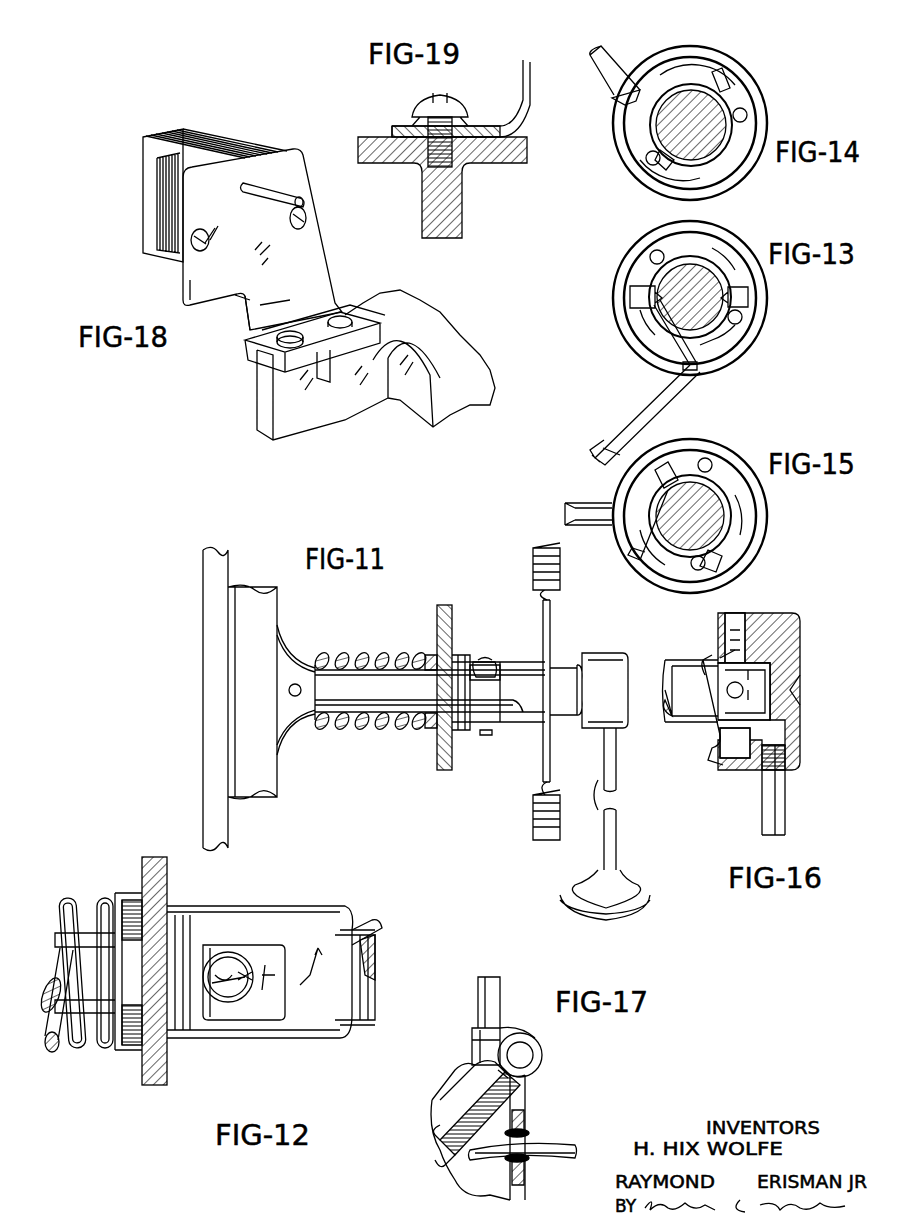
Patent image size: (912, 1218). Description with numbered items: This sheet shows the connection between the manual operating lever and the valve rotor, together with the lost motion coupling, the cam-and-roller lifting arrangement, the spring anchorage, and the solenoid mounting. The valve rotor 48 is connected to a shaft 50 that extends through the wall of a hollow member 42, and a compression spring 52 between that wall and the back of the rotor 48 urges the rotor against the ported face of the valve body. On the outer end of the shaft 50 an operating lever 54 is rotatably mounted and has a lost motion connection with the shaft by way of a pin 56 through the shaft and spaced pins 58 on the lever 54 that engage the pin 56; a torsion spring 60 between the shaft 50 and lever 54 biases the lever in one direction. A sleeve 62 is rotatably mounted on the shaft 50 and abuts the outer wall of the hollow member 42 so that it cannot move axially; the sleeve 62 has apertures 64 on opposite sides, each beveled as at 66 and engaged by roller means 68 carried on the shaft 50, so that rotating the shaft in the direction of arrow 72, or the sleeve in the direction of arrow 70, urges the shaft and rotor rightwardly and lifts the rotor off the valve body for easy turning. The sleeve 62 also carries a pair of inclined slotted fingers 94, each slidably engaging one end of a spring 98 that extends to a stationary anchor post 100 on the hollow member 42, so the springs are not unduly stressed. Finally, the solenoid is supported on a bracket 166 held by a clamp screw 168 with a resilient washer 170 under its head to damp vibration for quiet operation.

In FIG. 11, the hollow member 42 is at (440, 775).
In FIG. 12, the hollow member 42 is at (160, 1085).
In FIG. 11, the valve rotor 48 is at (262, 775).
In FIG. 14, the shaft 50 is at (740, 165).
In FIG. 13, the shaft 50 is at (660, 300).
In FIG. 15, the shaft 50 is at (655, 548).
In FIG. 16, the shaft 50 is at (660, 672).
In FIG. 11, the shaft 50 is at (362, 697).
In FIG. 12, the shaft 50 is at (365, 990).
In FIG. 11, the compression spring 52 is at (350, 662).
In FIG. 12, the compression spring 52 is at (82, 1052).
In FIG. 14, the operating lever 54 is at (628, 75).
In FIG. 13, the operating lever 54 is at (608, 428).
In FIG. 15, the operating lever 54 is at (572, 500).
In FIG. 16, the operating lever 54 is at (765, 808).
In FIG. 11, the operating lever 54 is at (620, 770).
In FIG. 14, the pin 56 is at (720, 70).
In FIG. 13, the pin 56 is at (638, 292).
In FIG. 15, the pin 56 is at (662, 468).
In FIG. 16, the pin 56 is at (735, 610).
In FIG. 14, the spaced pins 58 is at (747, 115).
In FIG. 13, the spaced pins 58 is at (650, 255).
In FIG. 15, the spaced pins 58 is at (710, 460).
In FIG. 14, the torsion spring 60 is at (655, 125).
In FIG. 13, the torsion spring 60 is at (655, 318).
In FIG. 15, the torsion spring 60 is at (735, 510).
In FIG. 16, the torsion spring 60 is at (698, 650).
In FIG. 11, the torsion spring 60 is at (612, 692).
In FIG. 11, the sleeve 62 is at (503, 728).
In FIG. 12, the sleeve 62 is at (330, 925).
In FIG. 11, the apertures 64 is at (487, 662).
In FIG. 12, the apertures 64 is at (265, 968).
In FIG. 12, the beveled side 66 is at (225, 1022).
In FIG. 11, the roller means 68 is at (480, 678).
In FIG. 12, the roller means 68 is at (235, 955).
In FIG. 12, the arrow 70 is at (302, 968).
In FIG. 12, the arrow 72 is at (375, 945).
In FIG. 11, the slotted fingers 94 is at (552, 610).
In FIG. 11, the spring 98 is at (533, 568).
In FIG. 17, the spring 98 is at (470, 1090).
In FIG. 17, the anchor post 100 is at (525, 1057).
In FIG. 19, the bracket 166 is at (522, 112).
In FIG. 18, the bracket 166 is at (316, 268).
In FIG. 19, the clamp screw 168 is at (456, 170).
In FIG. 18, the clamp screw 168 is at (372, 335).
In FIG. 19, the resilient washer 170 is at (450, 110).
In FIG. 18, the resilient washer 170 is at (380, 318).